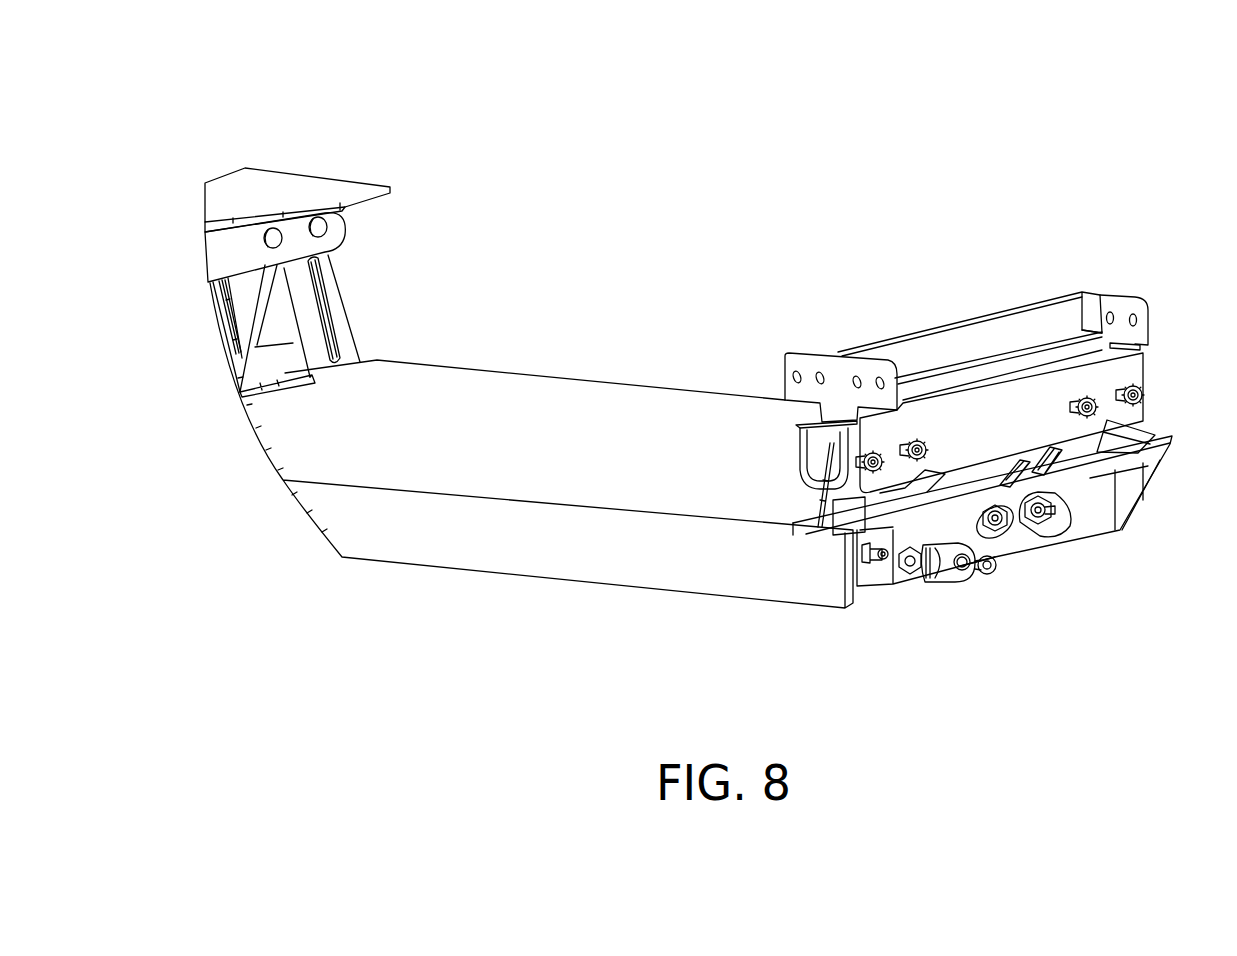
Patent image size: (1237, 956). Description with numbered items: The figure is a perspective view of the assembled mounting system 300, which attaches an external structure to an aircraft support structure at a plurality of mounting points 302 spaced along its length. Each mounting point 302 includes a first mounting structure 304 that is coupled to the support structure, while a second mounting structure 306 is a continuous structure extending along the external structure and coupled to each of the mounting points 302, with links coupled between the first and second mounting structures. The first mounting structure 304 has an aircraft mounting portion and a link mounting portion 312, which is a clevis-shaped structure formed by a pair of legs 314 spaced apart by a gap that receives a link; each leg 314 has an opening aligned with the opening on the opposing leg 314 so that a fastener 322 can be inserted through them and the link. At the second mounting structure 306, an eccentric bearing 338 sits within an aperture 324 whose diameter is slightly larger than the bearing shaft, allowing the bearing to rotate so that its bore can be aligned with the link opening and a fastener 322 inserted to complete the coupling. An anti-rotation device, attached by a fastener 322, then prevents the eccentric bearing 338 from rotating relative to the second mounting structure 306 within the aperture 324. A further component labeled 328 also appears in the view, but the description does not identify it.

The mounting system 300 is at (1047, 138).
The mounting point 302 is at (336, 162).
The first mounting structure 304 is at (1130, 290).
The second mounting structure 306 is at (590, 558).
The link mounting portion 312 is at (958, 337).
The leg 314 is at (800, 455).
The fastener 322 is at (933, 447).
The aperture 324 is at (870, 570).
The strut 328 is at (808, 515).
The eccentric bearing 338 is at (910, 582).